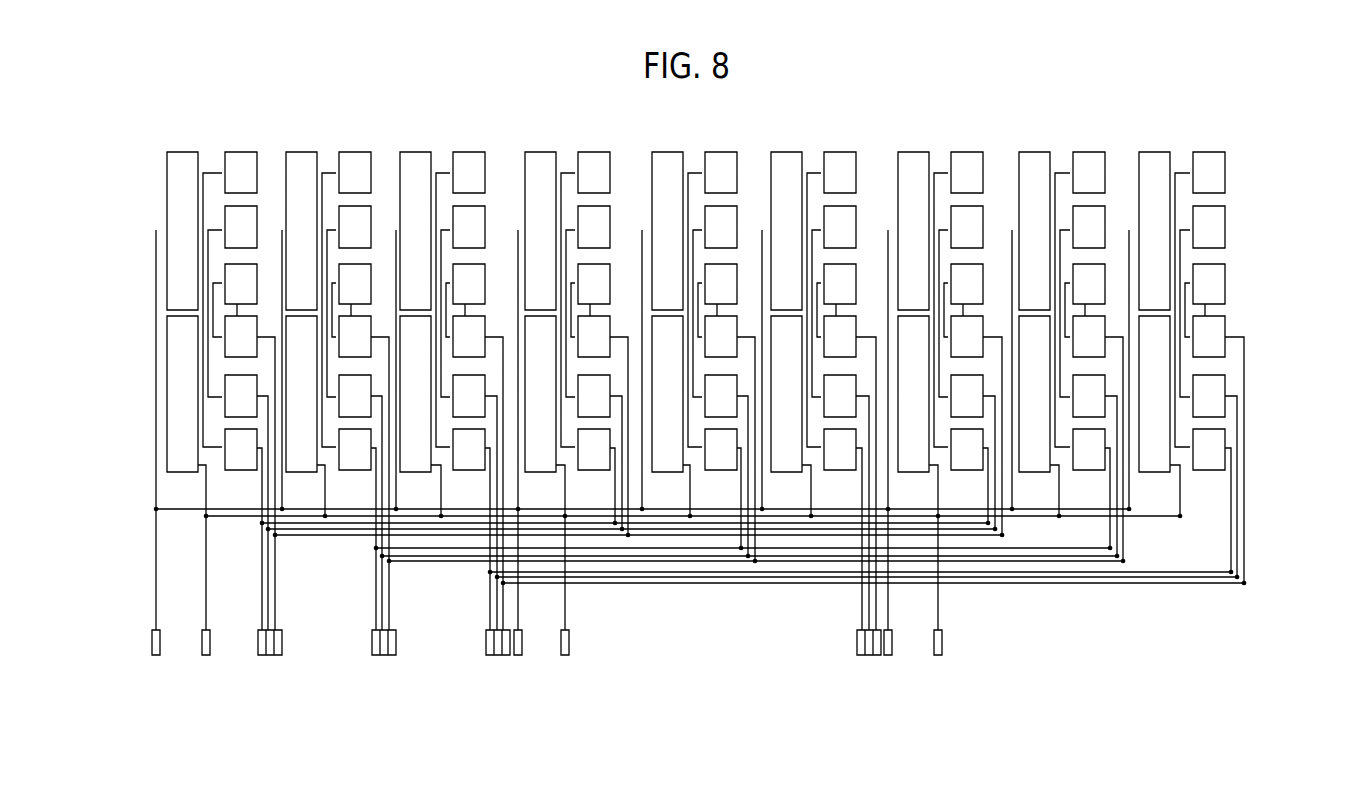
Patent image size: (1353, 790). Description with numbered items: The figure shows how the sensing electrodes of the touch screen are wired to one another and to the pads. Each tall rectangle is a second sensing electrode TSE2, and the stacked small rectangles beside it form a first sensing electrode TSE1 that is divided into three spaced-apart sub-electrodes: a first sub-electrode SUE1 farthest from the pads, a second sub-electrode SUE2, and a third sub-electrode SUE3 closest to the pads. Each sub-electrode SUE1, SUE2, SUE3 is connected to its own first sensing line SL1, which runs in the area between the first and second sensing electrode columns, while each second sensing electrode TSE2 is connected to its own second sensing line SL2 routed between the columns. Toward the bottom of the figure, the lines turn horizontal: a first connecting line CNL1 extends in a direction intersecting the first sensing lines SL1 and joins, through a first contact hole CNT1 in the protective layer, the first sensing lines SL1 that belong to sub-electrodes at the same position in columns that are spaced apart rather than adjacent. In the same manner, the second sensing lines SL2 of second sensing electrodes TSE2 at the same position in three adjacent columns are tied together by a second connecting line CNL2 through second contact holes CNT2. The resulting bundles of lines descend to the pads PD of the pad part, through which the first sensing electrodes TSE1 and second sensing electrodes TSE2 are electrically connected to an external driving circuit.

The second sensing electrode TSE2 is at (166, 187).
The second sensing line SL2 is at (156, 449).
The second contact hole CNT2 is at (155, 510).
The second connecting line CNL2 is at (173, 516).
The first contact hole CNT1 is at (262, 524).
The first connecting line CNL1 is at (316, 536).
The pad PD is at (156, 657).
The first sub-electrode SUE1 is at (1253, 332).
The second sub-electrode SUE2 is at (1253, 391).
The third sub-electrode SUE3 is at (1245, 367).
The first sensing electrode TSE1 is at (1272, 311).
The first sensing line SL1 is at (1244, 472).